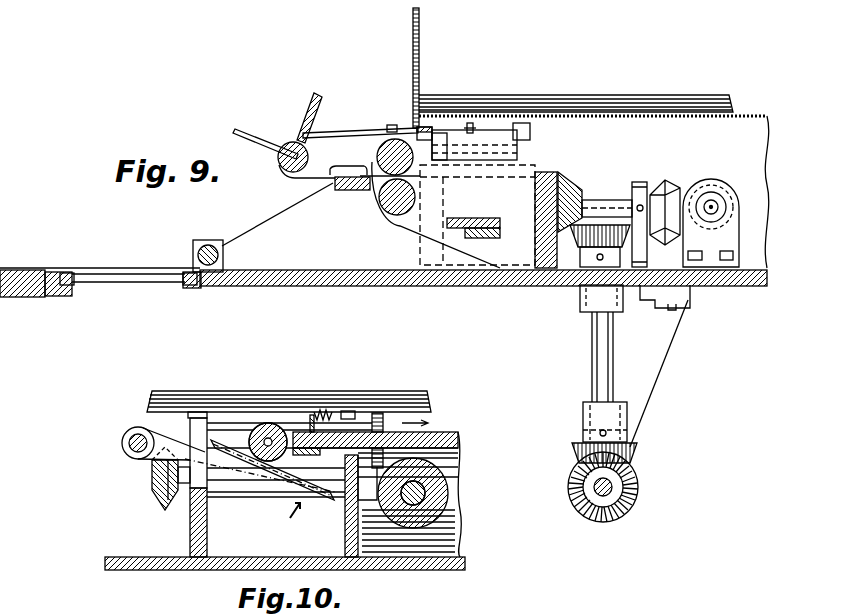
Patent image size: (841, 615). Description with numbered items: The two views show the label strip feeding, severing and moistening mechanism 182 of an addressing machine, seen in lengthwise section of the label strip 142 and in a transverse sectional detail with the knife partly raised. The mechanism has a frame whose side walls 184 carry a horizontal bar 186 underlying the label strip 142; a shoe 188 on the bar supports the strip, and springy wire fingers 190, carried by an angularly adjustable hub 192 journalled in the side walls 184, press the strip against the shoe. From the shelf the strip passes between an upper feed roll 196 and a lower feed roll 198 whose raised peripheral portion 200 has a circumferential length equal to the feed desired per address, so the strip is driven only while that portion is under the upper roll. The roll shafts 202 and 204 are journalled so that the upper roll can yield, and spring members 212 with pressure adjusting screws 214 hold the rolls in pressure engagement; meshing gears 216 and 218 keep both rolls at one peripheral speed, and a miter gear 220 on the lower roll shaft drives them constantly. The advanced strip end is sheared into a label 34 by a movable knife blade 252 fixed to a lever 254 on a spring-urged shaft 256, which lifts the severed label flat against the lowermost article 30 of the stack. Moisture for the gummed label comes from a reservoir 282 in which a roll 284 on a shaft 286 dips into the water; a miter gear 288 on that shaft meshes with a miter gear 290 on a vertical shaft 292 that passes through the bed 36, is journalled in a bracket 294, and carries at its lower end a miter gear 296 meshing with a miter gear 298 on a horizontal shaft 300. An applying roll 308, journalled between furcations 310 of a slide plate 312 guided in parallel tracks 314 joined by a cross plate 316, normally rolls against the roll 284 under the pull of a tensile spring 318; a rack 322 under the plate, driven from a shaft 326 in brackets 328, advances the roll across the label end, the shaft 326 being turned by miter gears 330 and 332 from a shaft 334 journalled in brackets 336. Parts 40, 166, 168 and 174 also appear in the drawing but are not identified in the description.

In FIG. 9, the article 30 is at (614, 95).
In FIG. 10, the article 30 is at (179, 392).
In FIG. 10, the label 34 is at (228, 437).
In FIG. 9, the bed 36 is at (301, 287).
In FIG. 10, the bed 36 is at (127, 557).
In FIG. 9, the bearing block 40 is at (53, 272).
In FIG. 9, the label strip 142 is at (104, 272).
In FIG. 9, the bracket 166 is at (214, 245).
In FIG. 9, the strip 168 is at (706, 118).
In FIG. 9, the wall 174 is at (413, 30).
In FIG. 9, the strip feeding and severing mechanism 182 is at (565, 172).
In FIG. 10, the strip feeding and severing mechanism 182 is at (466, 432).
In FIG. 9, the side walls 184 is at (411, 227).
In FIG. 10, the side walls 184 is at (330, 548).
In FIG. 9, the horizontal bar 186 is at (357, 191).
In FIG. 9, the shoe 188 is at (335, 182).
In FIG. 9, the springy wire fingers 190 is at (342, 167).
In FIG. 9, the hub 192 is at (287, 141).
In FIG. 9, the upper feed roll 196 is at (380, 152).
In FIG. 10, the upper feed roll 196 is at (216, 418).
In FIG. 9, the lower feed roll 198 is at (382, 206).
In FIG. 10, the lower feed roll 198 is at (272, 511).
In FIG. 9, the raised peripheral portion 200 is at (397, 215).
In FIG. 9, the shaft of upper roll 202 is at (380, 134).
In FIG. 9, the shaft of lower roll 204 is at (473, 212).
In FIG. 9, the spring members 212 is at (322, 136).
In FIG. 10, the spring members 212 is at (360, 413).
In FIG. 9, the pressure adjusting screws 214 is at (392, 125).
In FIG. 10, the pressure adjusting screws 214 is at (349, 411).
In FIG. 10, the gear 216 is at (398, 430).
In FIG. 10, the gear 218 is at (465, 445).
In FIG. 10, the miter gear 220 is at (150, 492).
In FIG. 9, the knife blade 252 is at (490, 212).
In FIG. 10, the knife blade 252 is at (315, 490).
In FIG. 9, the lever 254 is at (484, 240).
In FIG. 10, the lever 254 is at (243, 468).
In FIG. 10, the shaft 256 is at (132, 438).
In FIG. 10, the reservoir 282 is at (462, 476).
In FIG. 9, the roll 284 is at (503, 245).
In FIG. 10, the roll 284 is at (462, 491).
In FIG. 10, the shaft 286 is at (460, 505).
In FIG. 9, the miter gear 288 is at (578, 181).
In FIG. 9, the miter gear 290 is at (578, 242).
In FIG. 9, the vertical shaft 292 is at (592, 352).
In FIG. 9, the bracket 294 is at (641, 366).
In FIG. 9, the miter gear 296 is at (586, 450).
In FIG. 9, the miter gear 298 is at (632, 478).
In FIG. 9, the horizontal shaft 300 is at (613, 490).
In FIG. 9, the applying roll 308 is at (488, 135).
In FIG. 10, the applying roll 308 is at (271, 428).
In FIG. 10, the furcations 310 is at (313, 414).
In FIG. 10, the slide plate 312 is at (437, 425).
In FIG. 9, the parallel tracks 314 is at (418, 128).
In FIG. 9, the cross plate 316 is at (443, 130).
In FIG. 9, the tensile spring 318 is at (472, 123).
In FIG. 10, the tensile spring 318 is at (323, 408).
In FIG. 10, the rack 322 is at (463, 433).
In FIG. 9, the shaft 326 is at (606, 205).
In FIG. 9, the brackets 328 is at (641, 182).
In FIG. 9, the miter gear 330 is at (694, 186).
In FIG. 9, the miter gear 332 is at (735, 188).
In FIG. 9, the shaft 334 is at (722, 203).
In FIG. 9, the brackets 336 is at (727, 237).